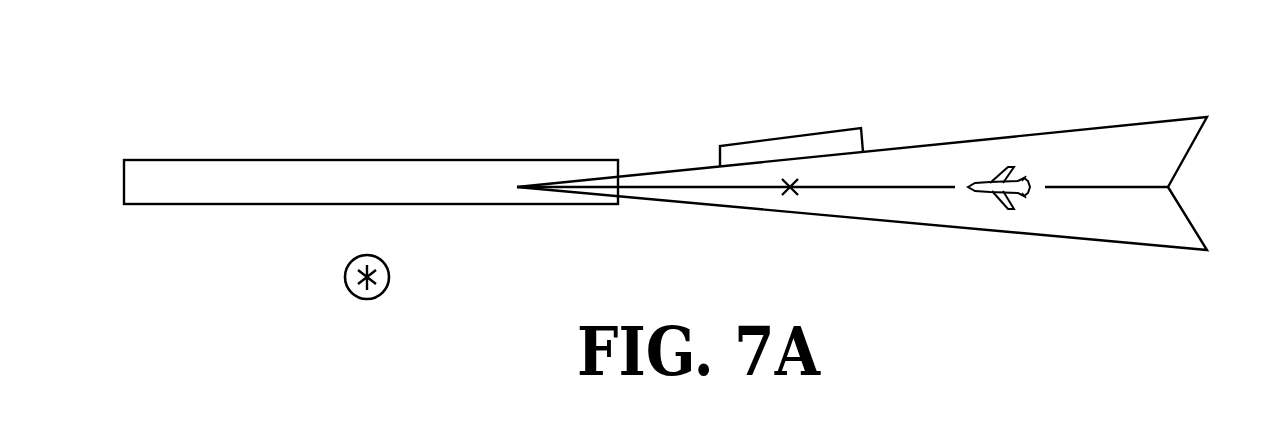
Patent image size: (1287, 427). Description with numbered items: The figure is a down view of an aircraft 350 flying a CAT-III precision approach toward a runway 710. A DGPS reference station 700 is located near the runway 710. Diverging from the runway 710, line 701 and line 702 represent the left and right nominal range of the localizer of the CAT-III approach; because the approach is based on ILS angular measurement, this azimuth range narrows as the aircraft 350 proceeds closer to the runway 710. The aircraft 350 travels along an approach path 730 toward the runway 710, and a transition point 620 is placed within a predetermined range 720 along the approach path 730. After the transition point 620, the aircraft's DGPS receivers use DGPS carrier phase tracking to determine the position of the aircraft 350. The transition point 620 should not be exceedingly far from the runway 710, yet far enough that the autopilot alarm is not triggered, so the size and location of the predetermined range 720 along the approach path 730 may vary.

The runway 710 is at (358, 158).
The DGPS reference station 700 is at (345, 270).
The line representing left nominal range of localizer 701 is at (1152, 121).
The line representing right nominal range of localizer 702 is at (1145, 246).
The approach path 730 is at (1172, 187).
The predetermined range 720 is at (790, 137).
The transition point 620 is at (790, 193).
The aircraft 350 is at (1000, 180).